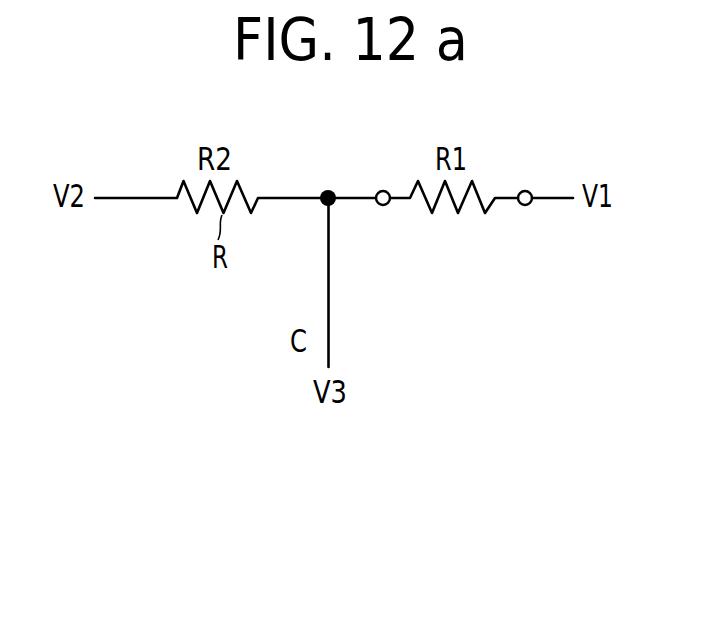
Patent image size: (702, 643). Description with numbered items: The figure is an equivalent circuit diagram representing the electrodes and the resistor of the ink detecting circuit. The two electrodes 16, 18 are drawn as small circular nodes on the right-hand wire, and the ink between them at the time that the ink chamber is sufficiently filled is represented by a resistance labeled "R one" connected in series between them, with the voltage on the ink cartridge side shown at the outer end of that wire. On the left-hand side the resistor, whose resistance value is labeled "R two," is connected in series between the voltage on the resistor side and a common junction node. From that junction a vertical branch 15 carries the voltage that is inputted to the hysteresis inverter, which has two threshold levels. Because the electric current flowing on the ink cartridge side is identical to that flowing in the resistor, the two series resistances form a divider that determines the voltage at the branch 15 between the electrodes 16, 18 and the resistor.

The hysteresis inverter 15 is at (331, 302).
The electrode 16 is at (387, 205).
The electrode 18 is at (527, 205).